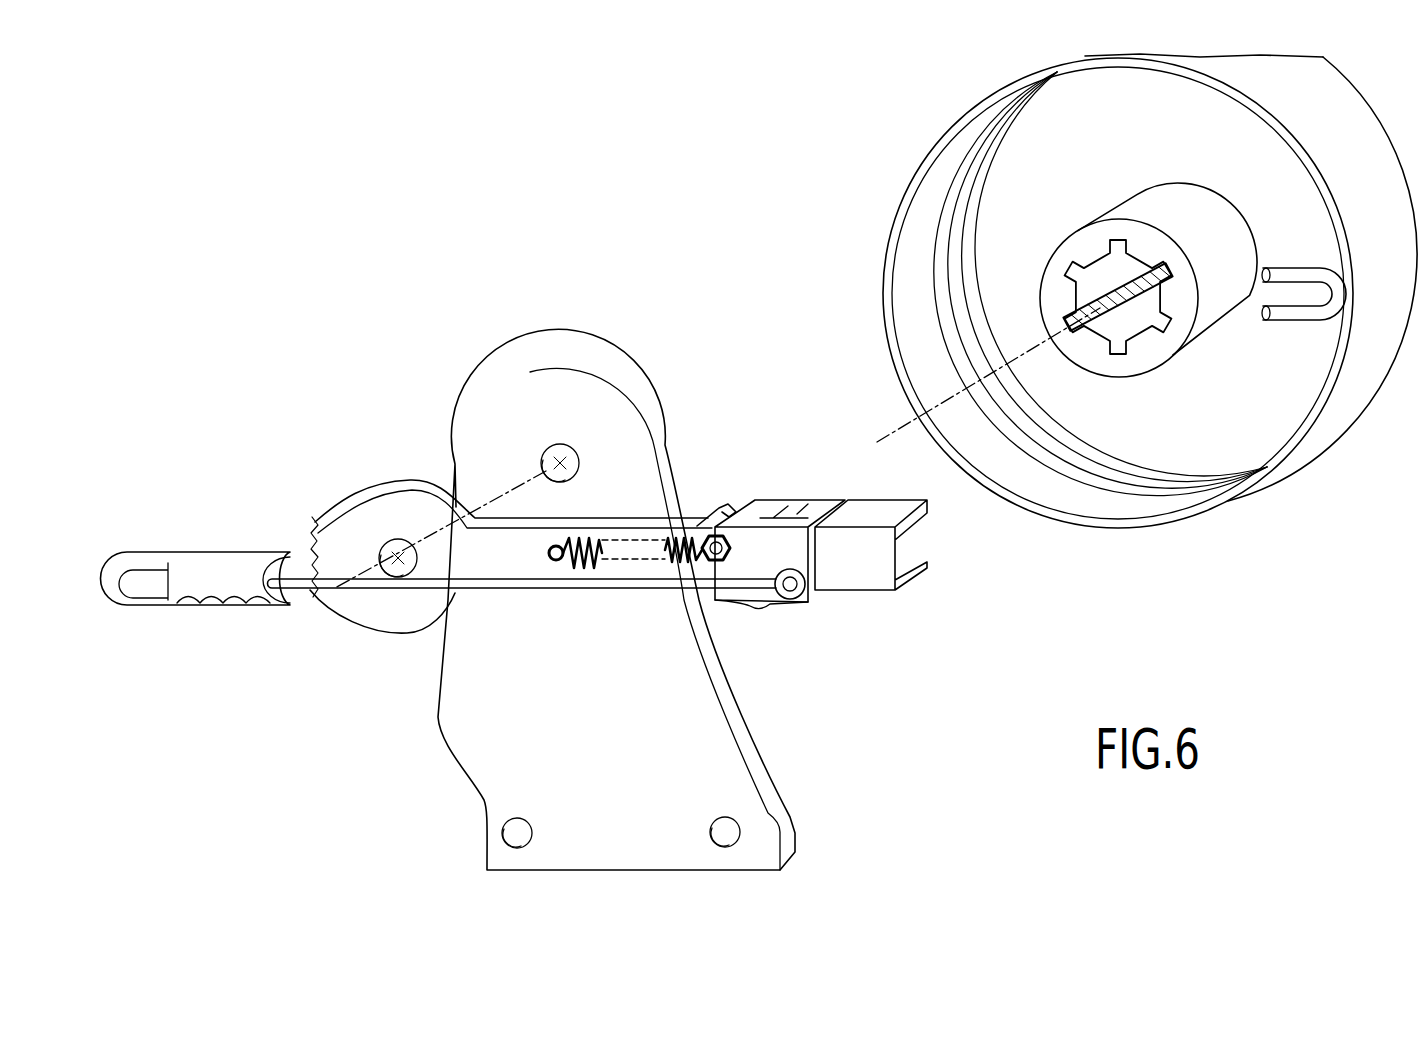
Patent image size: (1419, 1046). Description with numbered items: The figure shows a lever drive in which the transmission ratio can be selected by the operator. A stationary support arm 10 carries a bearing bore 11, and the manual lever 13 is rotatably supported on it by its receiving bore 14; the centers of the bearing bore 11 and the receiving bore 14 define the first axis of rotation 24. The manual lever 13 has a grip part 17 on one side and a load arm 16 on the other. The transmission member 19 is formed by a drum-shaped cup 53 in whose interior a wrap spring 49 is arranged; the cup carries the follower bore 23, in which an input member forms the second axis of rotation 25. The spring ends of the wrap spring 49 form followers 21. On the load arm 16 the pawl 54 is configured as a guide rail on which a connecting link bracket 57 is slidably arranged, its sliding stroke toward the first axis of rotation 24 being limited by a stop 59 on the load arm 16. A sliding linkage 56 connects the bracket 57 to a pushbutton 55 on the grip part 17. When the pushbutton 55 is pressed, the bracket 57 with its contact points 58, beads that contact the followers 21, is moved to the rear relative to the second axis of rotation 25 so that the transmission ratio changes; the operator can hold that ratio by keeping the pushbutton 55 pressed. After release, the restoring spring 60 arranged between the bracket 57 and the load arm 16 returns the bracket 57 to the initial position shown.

The support arm 10 is at (610, 762).
The bearing bore 11 is at (548, 446).
The manual lever 13 is at (330, 598).
The receiving bore 14 is at (397, 575).
The load arm 16 is at (602, 520).
The grip part 17 is at (193, 567).
The transmission member 19 is at (929, 282).
The followers 21 is at (1280, 312).
The follower bore 23 is at (1130, 290).
The first axis of rotation 24 is at (500, 497).
The second axis of rotation 25 is at (885, 421).
The wrap spring 49 is at (1097, 468).
The drum-shaped cup 53 is at (1147, 157).
The pawl 54 is at (867, 570).
The pushbutton 55 is at (147, 585).
The sliding linkage 56 is at (735, 582).
The connecting link bracket 57 is at (808, 510).
The contact points 58 is at (792, 503).
The stop 59 is at (722, 506).
The restoring spring 60 is at (669, 527).